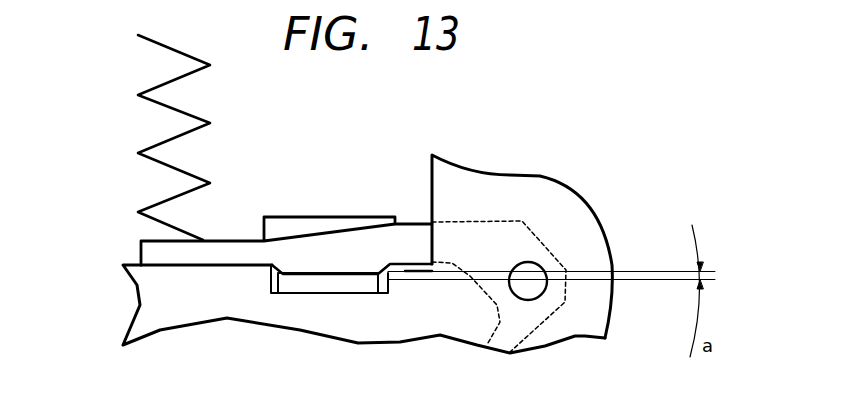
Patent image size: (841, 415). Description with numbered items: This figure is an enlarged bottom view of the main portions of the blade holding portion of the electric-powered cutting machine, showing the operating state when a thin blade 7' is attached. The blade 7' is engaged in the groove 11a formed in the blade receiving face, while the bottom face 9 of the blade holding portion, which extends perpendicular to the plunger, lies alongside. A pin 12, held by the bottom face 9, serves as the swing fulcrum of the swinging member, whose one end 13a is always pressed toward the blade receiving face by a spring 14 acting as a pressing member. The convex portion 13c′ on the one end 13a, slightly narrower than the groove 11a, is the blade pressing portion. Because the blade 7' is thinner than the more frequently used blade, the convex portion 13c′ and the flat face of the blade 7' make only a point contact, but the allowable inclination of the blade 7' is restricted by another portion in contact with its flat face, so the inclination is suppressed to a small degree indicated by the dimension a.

The spring 14 is at (160, 143).
The pressing member arm 13a is at (140, 252).
The engaging portion of pressing member 13c′ is at (327, 273).
The holder bracket 7' is at (329, 327).
The base body portion 11a is at (322, 293).
The housing 9 is at (503, 195).
The shaft hole 12 is at (527, 292).